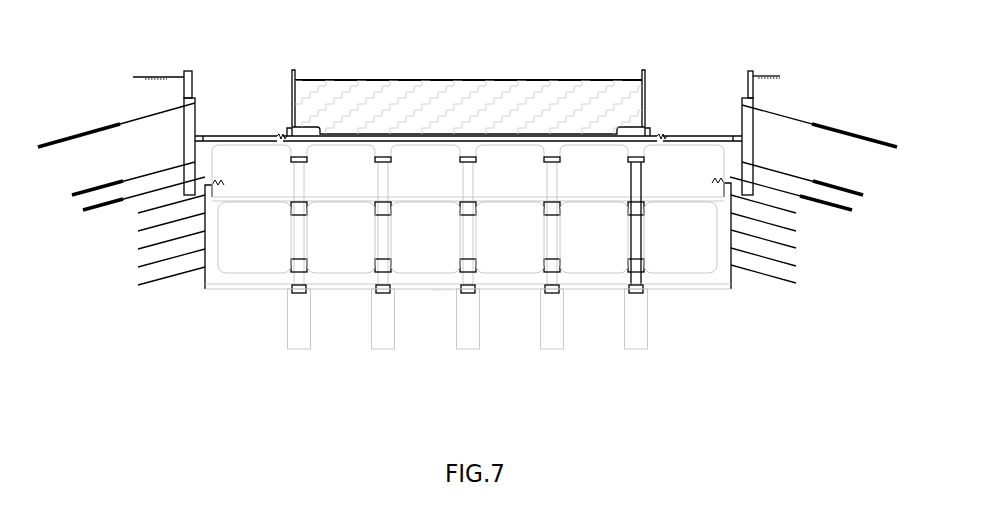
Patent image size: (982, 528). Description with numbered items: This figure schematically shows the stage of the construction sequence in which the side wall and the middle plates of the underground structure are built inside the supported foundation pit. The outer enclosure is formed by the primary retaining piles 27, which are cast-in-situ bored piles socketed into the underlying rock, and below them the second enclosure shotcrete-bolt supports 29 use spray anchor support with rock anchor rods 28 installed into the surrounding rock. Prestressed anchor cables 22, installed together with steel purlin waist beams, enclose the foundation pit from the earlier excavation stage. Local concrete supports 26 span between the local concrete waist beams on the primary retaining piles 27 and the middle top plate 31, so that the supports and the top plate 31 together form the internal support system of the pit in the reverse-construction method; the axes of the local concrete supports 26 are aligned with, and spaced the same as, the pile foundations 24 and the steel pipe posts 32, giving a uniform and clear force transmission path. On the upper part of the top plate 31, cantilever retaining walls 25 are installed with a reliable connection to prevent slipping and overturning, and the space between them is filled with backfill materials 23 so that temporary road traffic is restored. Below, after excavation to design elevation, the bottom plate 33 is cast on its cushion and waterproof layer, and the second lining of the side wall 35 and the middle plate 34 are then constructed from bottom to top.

The prestressed anchor cable 22 is at (68, 138).
The backfill materials 23 is at (462, 104).
The pile foundation 24 is at (298, 318).
The cantilever retaining wall 25 is at (307, 82).
The local concrete support 26 is at (213, 136).
The primary retaining pile 27 is at (186, 100).
The rock anchor rod 28 is at (160, 275).
The second enclosure shotcrete-bolt support 29 is at (205, 253).
The top plate 31 is at (467, 144).
The steel pipe post 32 is at (642, 238).
The bottom plate 33 is at (670, 277).
The middle plate 34 is at (430, 201).
The side wall 35 is at (215, 228).